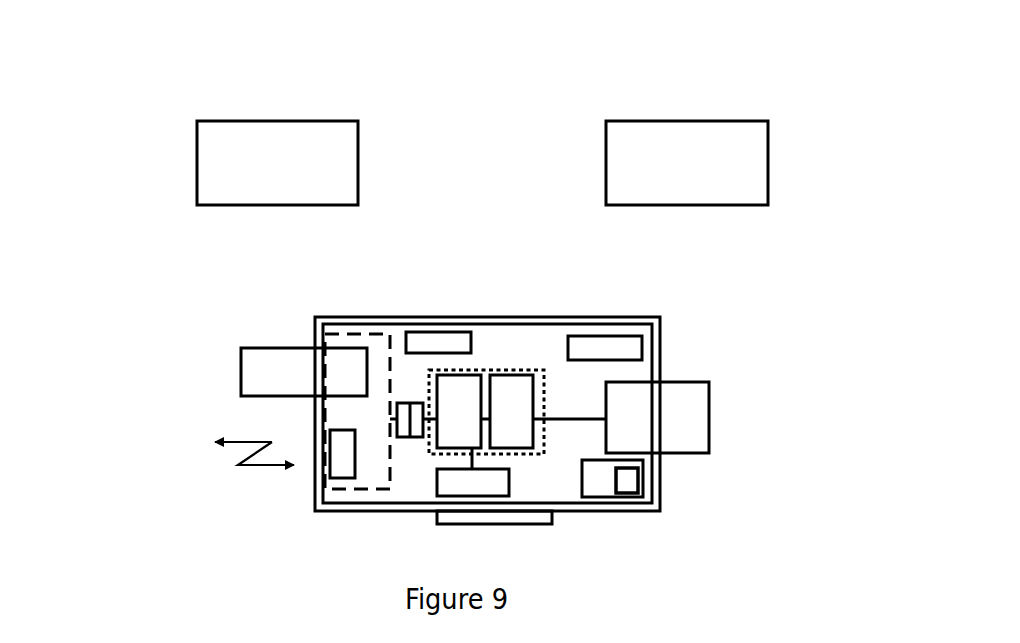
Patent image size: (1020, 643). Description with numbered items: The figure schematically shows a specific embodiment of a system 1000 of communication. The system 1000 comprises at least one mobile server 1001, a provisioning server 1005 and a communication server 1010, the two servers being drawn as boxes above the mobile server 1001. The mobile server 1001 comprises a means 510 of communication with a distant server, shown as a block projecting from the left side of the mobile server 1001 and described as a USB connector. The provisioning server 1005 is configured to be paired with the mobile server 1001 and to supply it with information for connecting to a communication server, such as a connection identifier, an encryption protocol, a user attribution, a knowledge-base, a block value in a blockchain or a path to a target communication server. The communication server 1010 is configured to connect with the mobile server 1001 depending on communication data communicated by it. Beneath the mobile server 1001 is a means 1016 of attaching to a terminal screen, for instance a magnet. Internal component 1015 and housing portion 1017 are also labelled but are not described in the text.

The system of communication 1000 is at (468, 80).
The provisioning server 1005 is at (208, 133).
The communication server 1010 is at (628, 138).
The mobile server 1001 is at (477, 310).
The component module 1015 is at (610, 345).
The means of attaching to a terminal screen 1016 is at (540, 517).
The housing 1017 is at (653, 331).
The means of communication with a distant server 510 is at (281, 363).